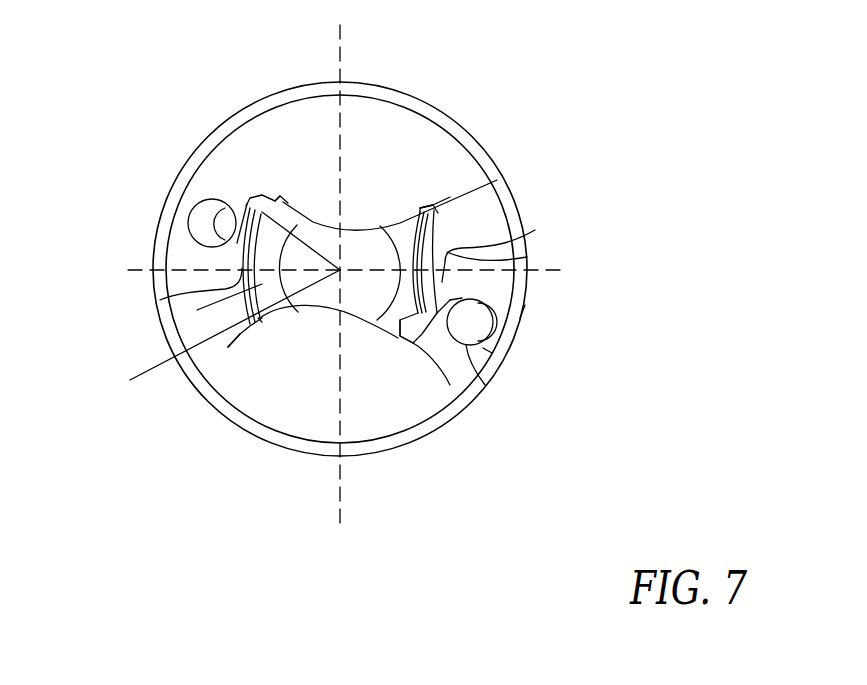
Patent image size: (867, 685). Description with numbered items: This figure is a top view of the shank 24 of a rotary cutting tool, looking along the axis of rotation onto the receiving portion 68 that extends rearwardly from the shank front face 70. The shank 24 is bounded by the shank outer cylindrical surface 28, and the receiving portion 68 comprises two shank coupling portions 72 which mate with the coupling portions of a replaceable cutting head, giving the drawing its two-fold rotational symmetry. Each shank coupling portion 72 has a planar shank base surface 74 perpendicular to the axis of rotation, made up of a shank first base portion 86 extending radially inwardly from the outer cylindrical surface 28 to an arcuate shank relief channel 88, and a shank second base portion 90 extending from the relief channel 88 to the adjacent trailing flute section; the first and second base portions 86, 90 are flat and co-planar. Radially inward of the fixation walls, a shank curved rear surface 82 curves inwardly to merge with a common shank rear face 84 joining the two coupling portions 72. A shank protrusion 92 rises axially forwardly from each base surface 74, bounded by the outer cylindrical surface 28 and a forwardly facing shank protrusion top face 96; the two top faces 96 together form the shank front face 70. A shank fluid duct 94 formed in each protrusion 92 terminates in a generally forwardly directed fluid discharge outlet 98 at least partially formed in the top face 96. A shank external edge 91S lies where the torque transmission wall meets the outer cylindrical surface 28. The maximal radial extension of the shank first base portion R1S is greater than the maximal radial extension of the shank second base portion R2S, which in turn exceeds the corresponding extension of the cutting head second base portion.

The shank 24 is at (545, 70).
The shank outer cylindrical surface 28 is at (503, 225).
The receiving portion 68 is at (232, 340).
The shank front face 70 is at (170, 243).
The shank coupling portion 72 is at (535, 230).
The shank base surface 74 is at (455, 210).
The shank curved rear surface 82 is at (300, 198).
The shank rear face 84 is at (368, 242).
The shank first base portion 86 is at (478, 205).
The shank relief channel 88 is at (262, 322).
The shank second base portion 90 is at (262, 208).
The shank external edge 91S is at (160, 300).
The shank protrusion 92 is at (500, 288).
The shank fluid duct 94 is at (466, 345).
The shank protrusion top face 96 is at (497, 360).
The fluid discharge outlet 98 is at (525, 305).
The maximal radial extension of the shank first base portion R1S is at (175, 316).
The maximal radial extension of the shank second base portion R2S is at (338, 226).